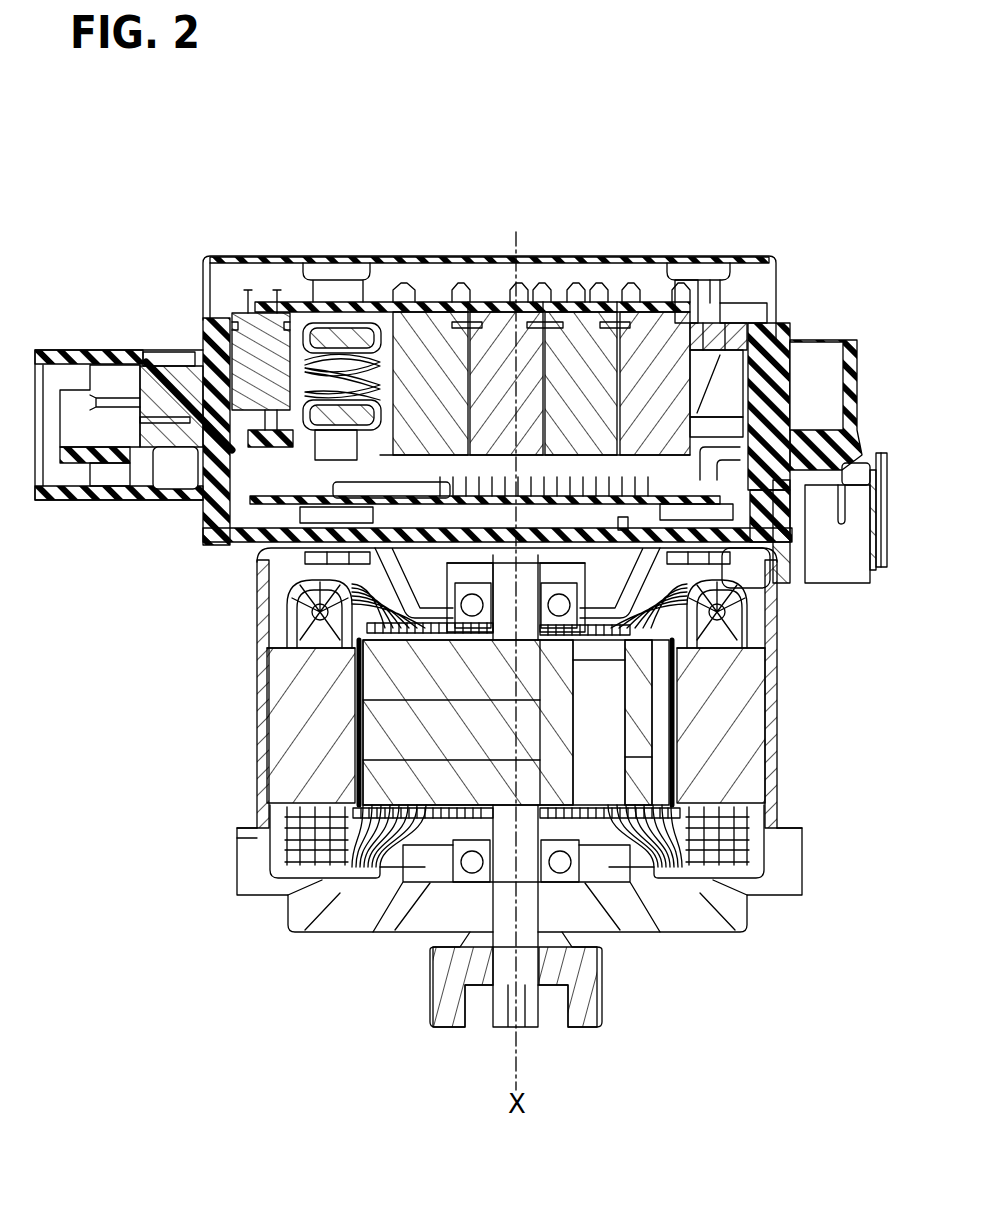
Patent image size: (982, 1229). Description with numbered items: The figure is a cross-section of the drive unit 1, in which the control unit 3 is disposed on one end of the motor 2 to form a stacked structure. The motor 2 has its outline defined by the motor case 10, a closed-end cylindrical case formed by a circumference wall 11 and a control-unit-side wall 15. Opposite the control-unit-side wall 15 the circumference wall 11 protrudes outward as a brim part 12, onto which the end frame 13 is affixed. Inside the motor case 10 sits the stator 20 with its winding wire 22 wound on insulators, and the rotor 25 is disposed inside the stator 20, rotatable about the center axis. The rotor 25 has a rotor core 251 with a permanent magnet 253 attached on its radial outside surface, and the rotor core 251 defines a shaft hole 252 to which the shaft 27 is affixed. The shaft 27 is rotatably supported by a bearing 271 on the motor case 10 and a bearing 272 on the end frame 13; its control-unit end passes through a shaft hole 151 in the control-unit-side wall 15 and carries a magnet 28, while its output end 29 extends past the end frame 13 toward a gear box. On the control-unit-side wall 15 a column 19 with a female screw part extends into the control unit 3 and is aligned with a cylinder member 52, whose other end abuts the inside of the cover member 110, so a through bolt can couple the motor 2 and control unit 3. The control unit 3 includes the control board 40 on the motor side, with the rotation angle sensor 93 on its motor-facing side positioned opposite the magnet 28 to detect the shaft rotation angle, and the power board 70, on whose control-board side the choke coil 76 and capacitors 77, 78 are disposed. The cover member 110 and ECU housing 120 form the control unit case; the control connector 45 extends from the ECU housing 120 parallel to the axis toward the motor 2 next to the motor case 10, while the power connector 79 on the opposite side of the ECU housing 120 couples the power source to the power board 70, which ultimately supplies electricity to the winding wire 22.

The drive unit 1 is at (246, 965).
The motor 2 is at (840, 705).
The control unit 3 is at (792, 293).
The motor case 10 is at (772, 668).
The circumference wall 11 is at (772, 620).
The brim part 12 is at (792, 818).
The end frame 13 is at (775, 885).
The control-unit-side wall 15 is at (808, 548).
The column 19 is at (303, 558).
The stator 20 is at (755, 693).
The winding wire 22 is at (740, 640).
The rotor 25 is at (655, 780).
The shaft 27 is at (523, 967).
The magnet 28 is at (300, 600).
The output end 29 is at (587, 1010).
The control board 40 is at (750, 500).
The control connector 45 is at (880, 460).
The cylinder member 52 is at (772, 302).
The power board 70 is at (327, 300).
The choke coil 76 is at (380, 340).
The capacitor 77 is at (249, 324).
The capacitor 78 is at (428, 335).
The power connector 79 is at (82, 350).
The rotation angle sensor 93 is at (335, 658).
The cover member 110 is at (738, 290).
The ECU housing 120 is at (860, 448).
The shaft hole 151 is at (322, 618).
The rotor core 251 is at (750, 728).
The shaft hole 252 is at (500, 738).
The permanent magnet 253 is at (645, 757).
The bearing 271 is at (352, 700).
The bearing 272 is at (425, 905).